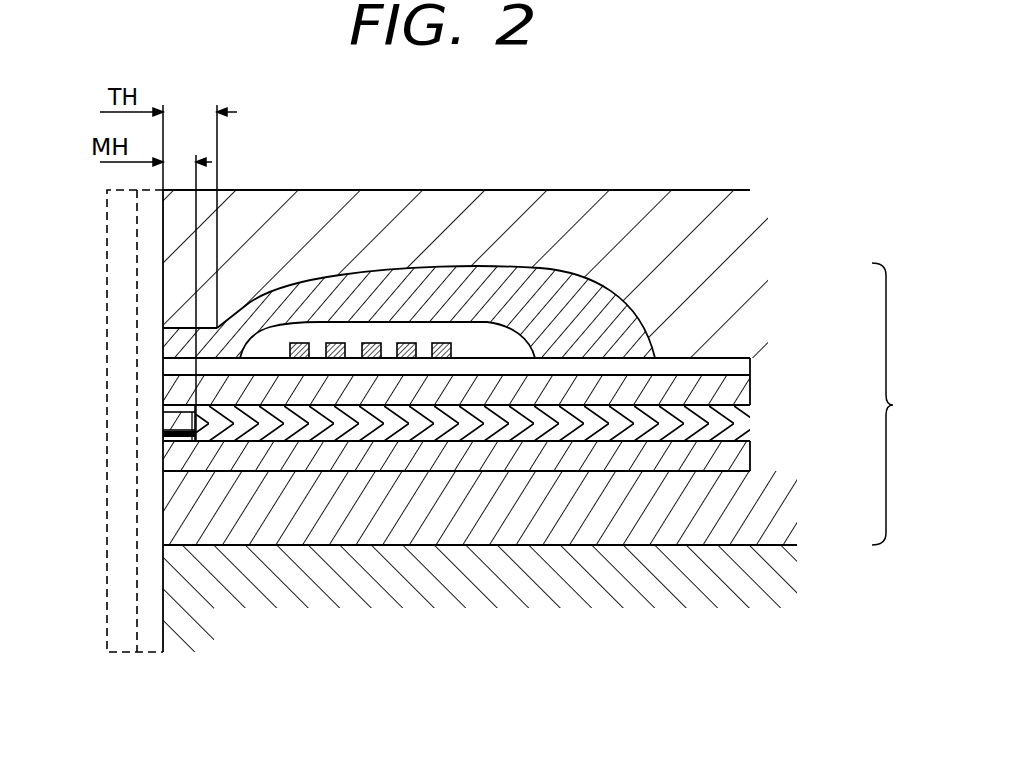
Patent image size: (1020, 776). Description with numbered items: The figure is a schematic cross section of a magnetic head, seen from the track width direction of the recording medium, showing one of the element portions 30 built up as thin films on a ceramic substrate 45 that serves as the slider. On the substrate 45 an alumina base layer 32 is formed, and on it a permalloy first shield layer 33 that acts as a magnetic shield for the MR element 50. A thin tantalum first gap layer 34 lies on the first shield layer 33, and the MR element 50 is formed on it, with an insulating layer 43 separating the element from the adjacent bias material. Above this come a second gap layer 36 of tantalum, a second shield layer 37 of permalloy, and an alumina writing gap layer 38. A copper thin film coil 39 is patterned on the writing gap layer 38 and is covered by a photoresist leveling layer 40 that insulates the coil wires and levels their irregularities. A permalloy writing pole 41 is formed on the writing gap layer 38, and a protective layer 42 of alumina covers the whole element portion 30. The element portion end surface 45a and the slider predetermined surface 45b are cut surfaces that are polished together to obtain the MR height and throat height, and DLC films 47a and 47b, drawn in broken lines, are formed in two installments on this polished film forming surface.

The element portion 30 is at (902, 404).
The base layer 32 is at (747, 510).
The first shield layer 33 is at (735, 456).
The first gap layer 34 is at (178, 443).
The second gap layer 36 is at (217, 411).
The second shield layer 37 is at (735, 392).
The writing gap layer 38 is at (725, 365).
The thin film coil 39 is at (448, 340).
The leveling layer 40 is at (485, 340).
The writing pole 41 is at (316, 300).
The protective layer 42 is at (580, 200).
The insulating layer 43 is at (163, 433).
The substrate 45 is at (725, 617).
The element portion end surface 45a is at (163, 461).
The slider predetermined surface 45b is at (163, 590).
The DLC film 47a is at (148, 262).
The DLC film 47b is at (120, 326).
The MR element 50 is at (193, 411).